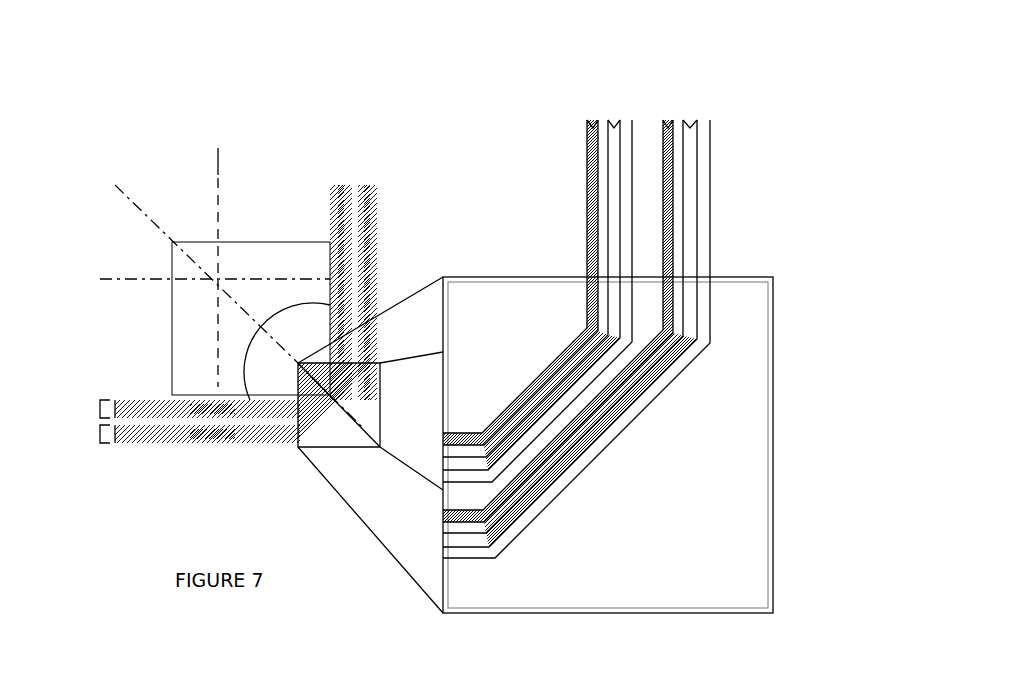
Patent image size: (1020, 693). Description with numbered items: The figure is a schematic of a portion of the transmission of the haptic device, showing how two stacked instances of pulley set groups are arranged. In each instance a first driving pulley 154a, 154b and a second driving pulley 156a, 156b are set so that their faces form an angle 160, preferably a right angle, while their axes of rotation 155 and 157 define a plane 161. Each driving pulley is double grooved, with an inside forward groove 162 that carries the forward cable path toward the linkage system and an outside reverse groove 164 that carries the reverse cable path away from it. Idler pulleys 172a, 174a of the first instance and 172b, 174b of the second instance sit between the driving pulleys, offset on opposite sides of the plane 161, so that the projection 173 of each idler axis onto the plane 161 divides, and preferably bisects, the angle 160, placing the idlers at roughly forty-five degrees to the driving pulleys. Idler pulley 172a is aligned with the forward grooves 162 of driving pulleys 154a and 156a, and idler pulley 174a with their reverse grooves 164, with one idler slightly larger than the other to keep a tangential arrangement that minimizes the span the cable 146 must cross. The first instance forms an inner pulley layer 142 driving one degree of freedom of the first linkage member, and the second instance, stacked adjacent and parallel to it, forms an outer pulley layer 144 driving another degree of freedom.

The inner pulley layer 142 is at (180, 409).
The outer pulley layer 144 is at (180, 434).
The cable 146 is at (668, 182).
The first driving pulley of first instance 154a is at (133, 400).
The first driving pulley of second instance 154b is at (140, 447).
The axis of rotation of first driving pulley 155 is at (220, 158).
The second driving pulley of first instance 156a is at (345, 184).
The second driving pulley of second instance 156b is at (373, 185).
The axis of rotation of second driving pulley 157 is at (108, 276).
The angle 160 is at (261, 326).
The plane 161 is at (273, 258).
The forward groove 162 is at (596, 118).
The reverse groove 164 is at (618, 120).
The first idler pulley of first instance 172a is at (537, 377).
The first idler pulley of second instance 172b is at (578, 440).
The projection of idler pulley axis 173 is at (118, 186).
The second idler pulley of first instance 174a is at (573, 337).
The second idler pulley of second instance 174b is at (647, 417).